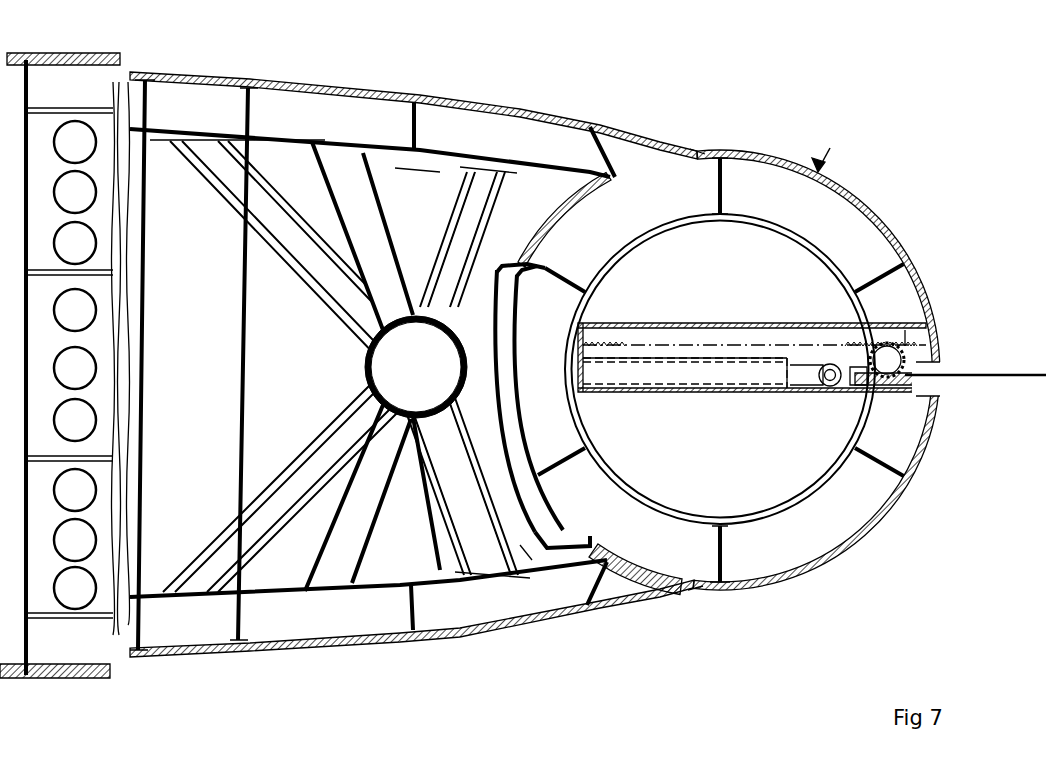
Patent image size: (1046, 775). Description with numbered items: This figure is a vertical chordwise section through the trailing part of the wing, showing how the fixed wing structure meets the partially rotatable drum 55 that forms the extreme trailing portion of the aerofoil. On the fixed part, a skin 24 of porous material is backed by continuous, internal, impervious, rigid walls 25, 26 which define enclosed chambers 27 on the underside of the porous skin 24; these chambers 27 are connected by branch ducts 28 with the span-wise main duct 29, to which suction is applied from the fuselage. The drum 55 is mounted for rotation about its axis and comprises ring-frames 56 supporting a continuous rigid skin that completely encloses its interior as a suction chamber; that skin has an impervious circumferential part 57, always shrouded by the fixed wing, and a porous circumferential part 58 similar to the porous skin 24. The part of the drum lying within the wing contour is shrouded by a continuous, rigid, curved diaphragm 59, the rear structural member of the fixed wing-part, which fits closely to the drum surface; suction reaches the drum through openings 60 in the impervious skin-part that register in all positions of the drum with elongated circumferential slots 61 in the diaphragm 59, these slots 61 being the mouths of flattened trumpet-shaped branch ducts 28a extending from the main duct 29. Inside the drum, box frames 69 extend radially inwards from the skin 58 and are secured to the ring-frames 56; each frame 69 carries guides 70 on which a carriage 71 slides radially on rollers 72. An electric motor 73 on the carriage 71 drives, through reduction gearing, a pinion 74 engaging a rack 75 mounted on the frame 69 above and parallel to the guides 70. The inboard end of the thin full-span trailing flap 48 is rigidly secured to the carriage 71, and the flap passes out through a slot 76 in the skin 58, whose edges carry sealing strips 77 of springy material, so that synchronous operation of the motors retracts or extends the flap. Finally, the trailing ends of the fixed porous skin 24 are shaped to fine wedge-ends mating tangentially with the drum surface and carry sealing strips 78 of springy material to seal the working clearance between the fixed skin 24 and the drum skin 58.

The porous skin 24 is at (535, 102).
The internal impervious rigid wall 25 is at (29, 90).
The internal impervious rigid wall 26 is at (430, 574).
The enclosed chamber 27 is at (80, 85).
The branch duct 28 is at (468, 220).
The flattened trumpet-shaped branch duct 28a is at (528, 545).
The span-wise duct 29 is at (388, 366).
The trailing flap 48 is at (1032, 372).
The partially rotatable drum 55 is at (831, 145).
The ring-frame 56 is at (822, 241).
The impervious circumferential skin part 57 is at (518, 426).
The porous circumferential skin part 58 is at (862, 212).
The curved diaphragm 59 is at (672, 165).
The opening 60 is at (575, 526).
The elongated circumferential slot 61 is at (521, 272).
The box frame 69 is at (614, 326).
The guide 70 is at (706, 372).
The carriage 71 is at (858, 392).
The roller 72 is at (818, 385).
The electric motor 73 is at (920, 332).
The pinion 74 is at (897, 356).
The rack 75 is at (840, 335).
The slot 76 is at (930, 380).
The sealing strip 77 is at (939, 376).
The sealing strip 78 is at (745, 160).